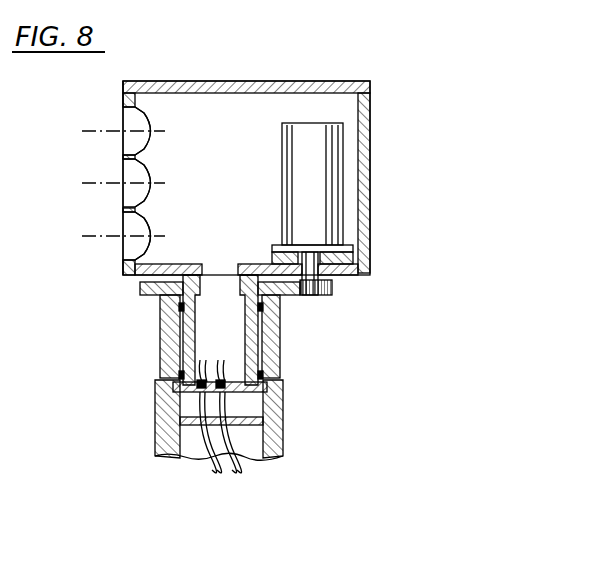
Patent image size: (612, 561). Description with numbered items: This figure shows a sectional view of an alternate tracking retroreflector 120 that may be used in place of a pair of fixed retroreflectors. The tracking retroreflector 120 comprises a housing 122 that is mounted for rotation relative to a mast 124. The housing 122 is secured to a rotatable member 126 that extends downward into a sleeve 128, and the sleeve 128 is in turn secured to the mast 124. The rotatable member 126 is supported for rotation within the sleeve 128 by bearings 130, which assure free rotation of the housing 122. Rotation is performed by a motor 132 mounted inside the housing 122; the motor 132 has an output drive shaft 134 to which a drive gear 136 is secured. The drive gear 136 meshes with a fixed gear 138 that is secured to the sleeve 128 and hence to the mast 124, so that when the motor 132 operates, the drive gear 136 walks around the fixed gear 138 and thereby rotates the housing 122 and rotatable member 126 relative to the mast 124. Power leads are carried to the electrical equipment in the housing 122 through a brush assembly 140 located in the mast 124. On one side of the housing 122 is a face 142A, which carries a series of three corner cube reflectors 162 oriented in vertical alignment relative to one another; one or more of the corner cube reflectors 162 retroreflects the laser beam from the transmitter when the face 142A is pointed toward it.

The tracking retroreflector 120 is at (412, 30).
The housing 122 is at (370, 142).
The mast 124 is at (284, 432).
The rotatable member 126 is at (256, 341).
The sleeve 128 is at (170, 350).
The bearings 130 is at (160, 312).
The motor 132 is at (300, 122).
The output drive shaft 134 is at (320, 276).
The drive gear 136 is at (322, 297).
The fixed gear 138 is at (152, 297).
The brush assembly 140 is at (186, 396).
The face 142A is at (124, 104).
The corner cube reflectors 162 is at (148, 142).